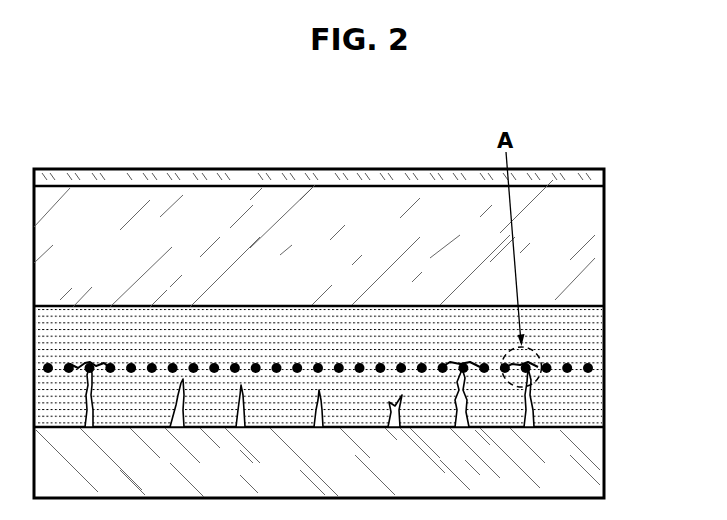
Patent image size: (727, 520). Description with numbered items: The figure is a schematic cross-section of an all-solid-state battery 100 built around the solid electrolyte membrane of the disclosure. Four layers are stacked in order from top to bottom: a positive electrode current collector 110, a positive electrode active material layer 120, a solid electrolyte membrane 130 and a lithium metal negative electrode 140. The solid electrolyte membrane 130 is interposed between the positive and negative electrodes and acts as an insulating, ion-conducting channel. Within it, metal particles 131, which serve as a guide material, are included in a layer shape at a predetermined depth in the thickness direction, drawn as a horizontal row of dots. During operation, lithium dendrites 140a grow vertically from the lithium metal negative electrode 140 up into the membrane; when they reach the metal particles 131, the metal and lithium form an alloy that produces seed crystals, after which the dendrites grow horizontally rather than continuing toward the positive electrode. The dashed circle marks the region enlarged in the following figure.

The all-solid-state battery 100 is at (77, 128).
The positive electrode current collector 110 is at (606, 177).
The positive electrode active material layer 120 is at (598, 243).
The solid electrolyte membrane 130 is at (598, 337).
The metal particle 131 is at (596, 370).
The lithium metal negative electrode 140 is at (598, 466).
The lithium dendrite 140a is at (533, 402).